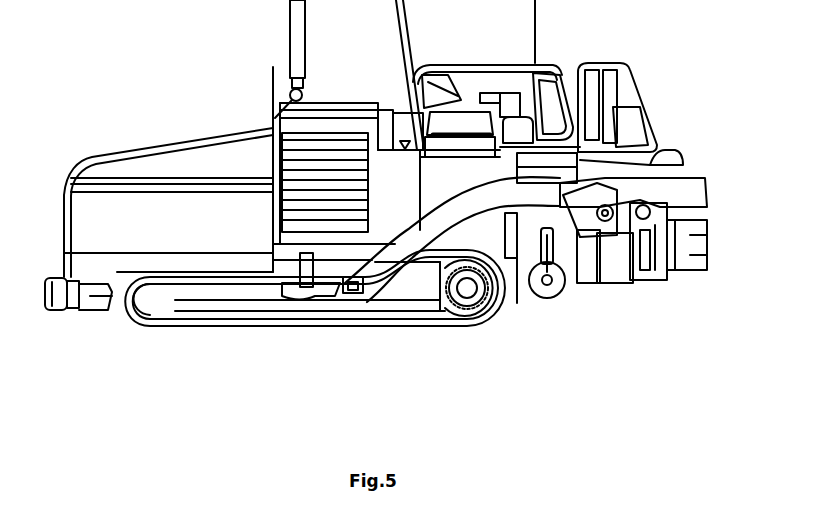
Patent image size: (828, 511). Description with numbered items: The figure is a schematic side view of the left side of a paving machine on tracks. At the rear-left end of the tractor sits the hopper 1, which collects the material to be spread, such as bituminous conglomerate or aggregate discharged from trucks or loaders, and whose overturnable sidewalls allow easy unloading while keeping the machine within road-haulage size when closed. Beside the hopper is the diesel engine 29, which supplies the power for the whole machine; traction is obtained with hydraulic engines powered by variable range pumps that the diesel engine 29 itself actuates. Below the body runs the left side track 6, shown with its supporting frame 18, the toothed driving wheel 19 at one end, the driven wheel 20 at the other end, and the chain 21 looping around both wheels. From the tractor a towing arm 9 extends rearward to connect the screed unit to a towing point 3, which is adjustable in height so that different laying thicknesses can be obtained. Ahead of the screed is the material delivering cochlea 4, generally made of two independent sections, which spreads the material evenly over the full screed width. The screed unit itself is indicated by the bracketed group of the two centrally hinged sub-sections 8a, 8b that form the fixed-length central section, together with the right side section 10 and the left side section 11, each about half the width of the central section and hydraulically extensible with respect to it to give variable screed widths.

The hopper 1 is at (180, 168).
The diesel engine 29 is at (300, 173).
The towing arm 9 is at (393, 277).
The left side track 6 is at (301, 348).
The driven wheel 20 is at (137, 327).
The chain 21 is at (343, 318).
The supporting frame 18 is at (243, 295).
The toothed driving wheel 19 is at (487, 318).
The towing point 3 is at (304, 326).
The material delivering cochlea 4 is at (562, 297).
The sub-section of central section 8a is at (625, 268).
The sub-section of central section 8b is at (682, 270).
The right side section 10 is at (748, 400).
The left side section 11 is at (663, 327).